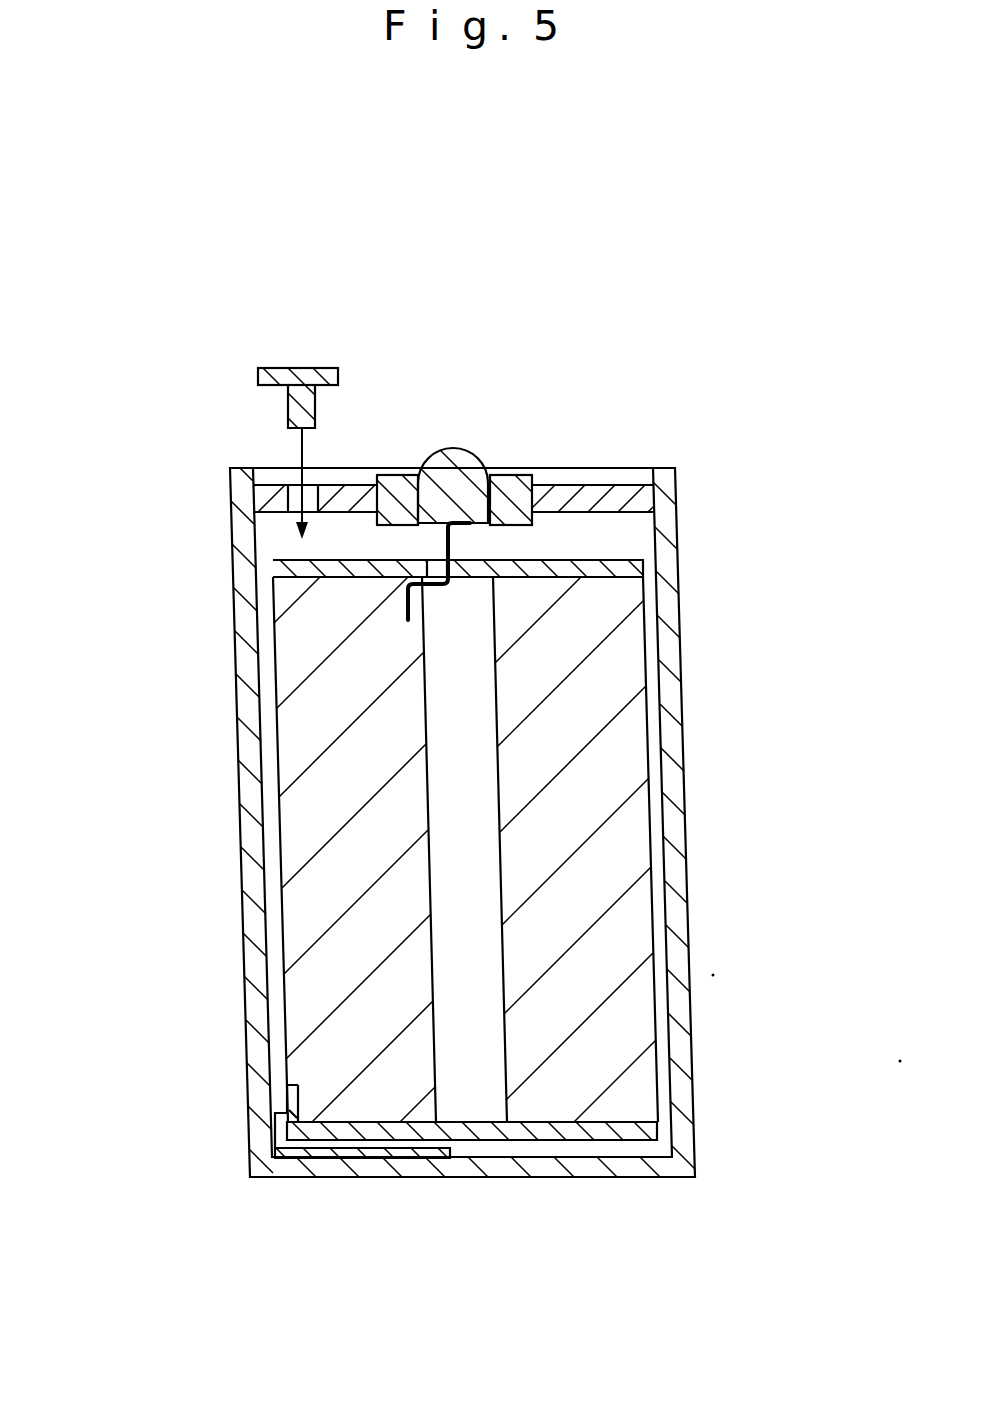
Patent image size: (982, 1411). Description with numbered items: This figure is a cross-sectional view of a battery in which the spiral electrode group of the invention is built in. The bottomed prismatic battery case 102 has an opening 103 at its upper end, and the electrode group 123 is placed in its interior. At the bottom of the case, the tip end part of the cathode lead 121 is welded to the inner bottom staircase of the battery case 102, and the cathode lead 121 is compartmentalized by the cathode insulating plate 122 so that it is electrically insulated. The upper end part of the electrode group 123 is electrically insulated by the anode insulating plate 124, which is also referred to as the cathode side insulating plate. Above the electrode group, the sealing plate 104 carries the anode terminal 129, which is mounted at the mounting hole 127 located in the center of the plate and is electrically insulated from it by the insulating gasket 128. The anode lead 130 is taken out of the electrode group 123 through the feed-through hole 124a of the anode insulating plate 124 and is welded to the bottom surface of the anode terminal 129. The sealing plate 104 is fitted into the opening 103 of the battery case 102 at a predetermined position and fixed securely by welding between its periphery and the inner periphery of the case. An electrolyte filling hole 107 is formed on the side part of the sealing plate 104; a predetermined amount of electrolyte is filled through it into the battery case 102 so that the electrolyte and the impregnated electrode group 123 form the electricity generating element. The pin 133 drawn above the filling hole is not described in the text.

The battery case 102 is at (672, 737).
The opening 103 is at (648, 490).
The sealing plate 104 is at (575, 497).
The electrolyte filling hole 107 is at (293, 502).
The cathode lead 121 is at (338, 1160).
The cathode insulating plate 122 is at (540, 1128).
The electrode group 123 is at (580, 988).
The anode insulating plate 124 is at (570, 567).
The feed-through hole 124a is at (472, 575).
The mounting hole 127 is at (403, 492).
The insulating gasket 128 is at (510, 497).
The anode terminal 129 is at (450, 492).
The anode lead 130 is at (447, 545).
The pin 133 is at (293, 367).